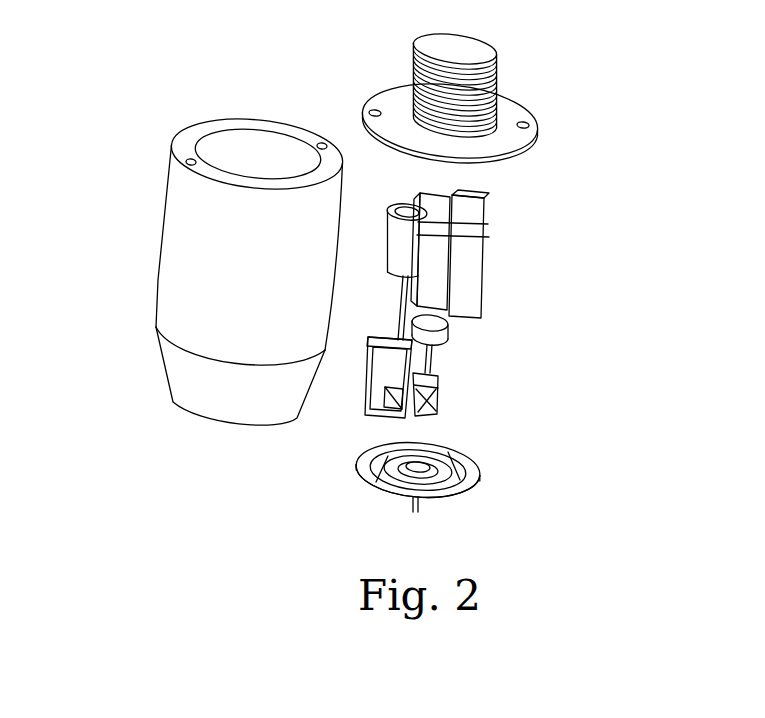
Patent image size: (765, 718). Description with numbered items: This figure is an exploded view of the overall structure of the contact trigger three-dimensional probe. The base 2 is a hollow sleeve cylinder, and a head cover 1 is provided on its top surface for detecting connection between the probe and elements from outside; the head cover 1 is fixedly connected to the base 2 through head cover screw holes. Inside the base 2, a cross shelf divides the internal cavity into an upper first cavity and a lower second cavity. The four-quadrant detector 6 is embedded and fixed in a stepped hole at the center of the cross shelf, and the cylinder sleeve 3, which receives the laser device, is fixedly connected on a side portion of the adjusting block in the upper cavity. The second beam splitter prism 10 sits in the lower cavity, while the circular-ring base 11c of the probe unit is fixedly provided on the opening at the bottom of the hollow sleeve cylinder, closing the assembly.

The head cover 1 is at (497, 98).
The base 2 is at (212, 224).
The cylinder sleeve 3 is at (490, 238).
The four-quadrant detector 6 is at (450, 330).
The second beam splitter prism 10 is at (440, 400).
The circular-ring base 11c is at (480, 487).